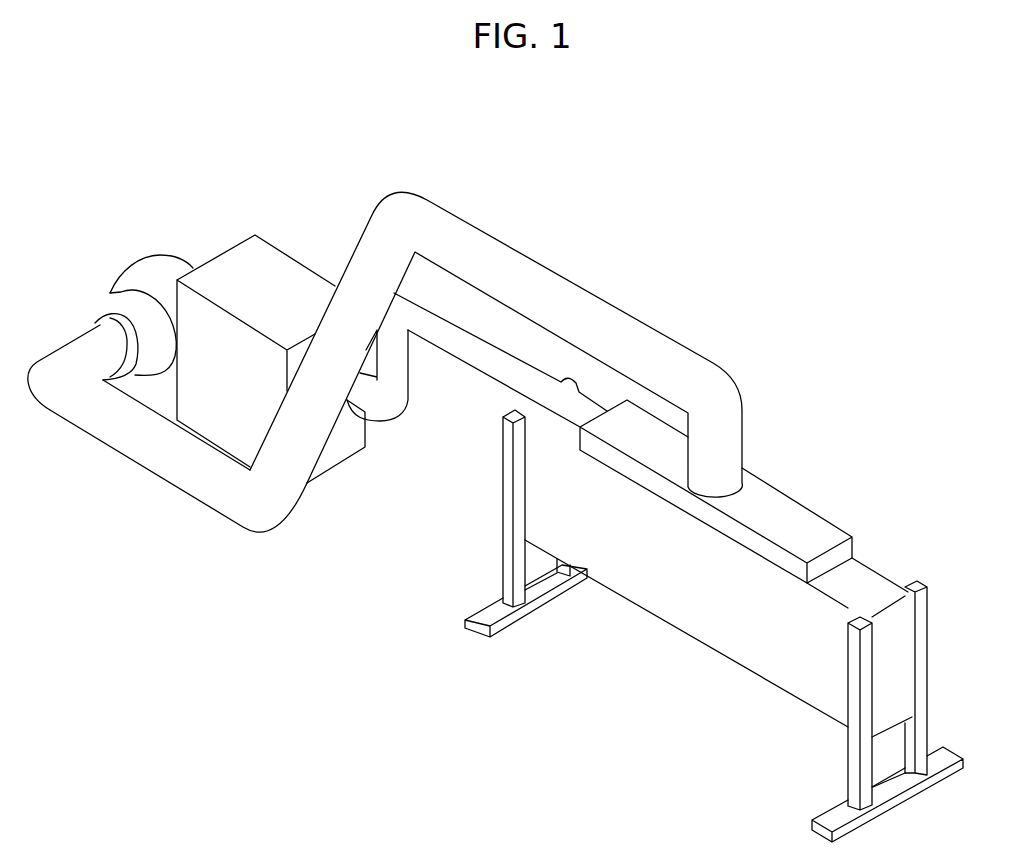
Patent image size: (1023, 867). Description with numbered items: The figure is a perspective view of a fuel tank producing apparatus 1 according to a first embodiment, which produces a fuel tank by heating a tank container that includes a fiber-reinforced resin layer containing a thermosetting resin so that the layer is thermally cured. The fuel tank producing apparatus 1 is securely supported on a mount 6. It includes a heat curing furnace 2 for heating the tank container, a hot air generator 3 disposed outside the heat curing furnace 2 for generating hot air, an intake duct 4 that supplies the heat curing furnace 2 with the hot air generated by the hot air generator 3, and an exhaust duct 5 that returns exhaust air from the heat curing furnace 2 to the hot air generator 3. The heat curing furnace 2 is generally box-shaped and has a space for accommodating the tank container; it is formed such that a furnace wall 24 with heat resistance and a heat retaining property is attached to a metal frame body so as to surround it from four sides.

The fuel tank producing apparatus 1 is at (663, 225).
The heat curing furnace 2 is at (673, 632).
The hot air generator 3 is at (275, 265).
The intake duct 4 is at (458, 350).
The exhaust duct 5 is at (185, 462).
The mount 6 is at (857, 770).
The furnace wall 24 is at (735, 623).